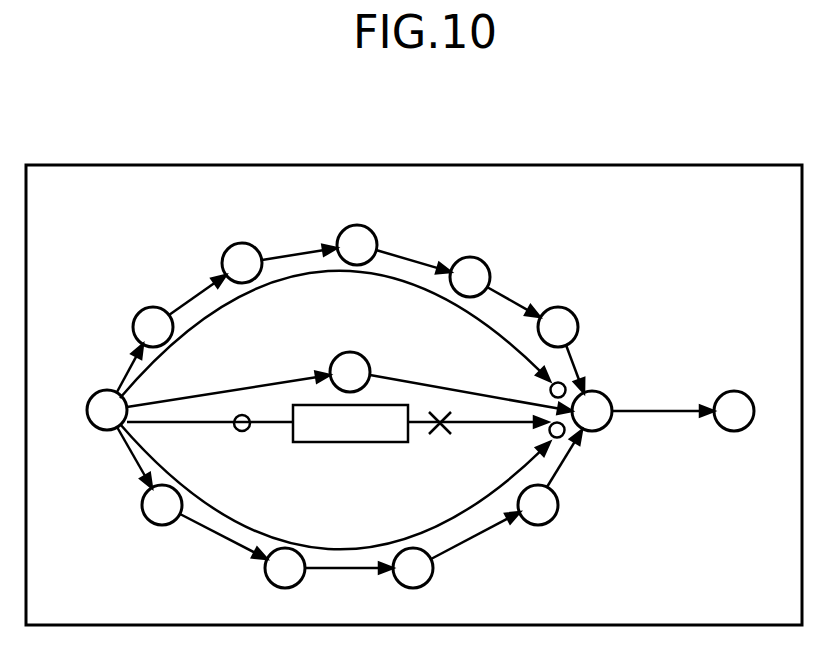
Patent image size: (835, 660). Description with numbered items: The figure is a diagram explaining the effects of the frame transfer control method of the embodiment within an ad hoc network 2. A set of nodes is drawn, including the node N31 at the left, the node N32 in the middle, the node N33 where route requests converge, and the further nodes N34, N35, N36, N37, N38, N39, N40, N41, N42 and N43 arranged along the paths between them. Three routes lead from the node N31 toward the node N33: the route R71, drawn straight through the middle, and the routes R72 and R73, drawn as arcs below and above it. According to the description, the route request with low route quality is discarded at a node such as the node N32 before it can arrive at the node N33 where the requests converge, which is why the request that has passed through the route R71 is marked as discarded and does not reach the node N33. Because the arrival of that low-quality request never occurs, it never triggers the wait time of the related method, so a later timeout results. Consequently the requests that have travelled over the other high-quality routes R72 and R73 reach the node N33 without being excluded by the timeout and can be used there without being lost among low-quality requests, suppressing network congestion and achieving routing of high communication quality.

The ad hoc network 2 is at (710, 165).
The node N31 is at (127, 403).
The node N32 is at (341, 355).
The node N33 is at (609, 398).
The node N34 is at (148, 519).
The node N35 is at (268, 583).
The node N36 is at (428, 583).
The node N37 is at (557, 504).
The node N38 is at (140, 314).
The node N39 is at (226, 256).
The node N40 is at (378, 241).
The node N41 is at (488, 265).
The node N42 is at (576, 318).
The node N43 is at (738, 391).
The route R71 is at (276, 427).
The route R72 is at (425, 527).
The route R73 is at (417, 290).